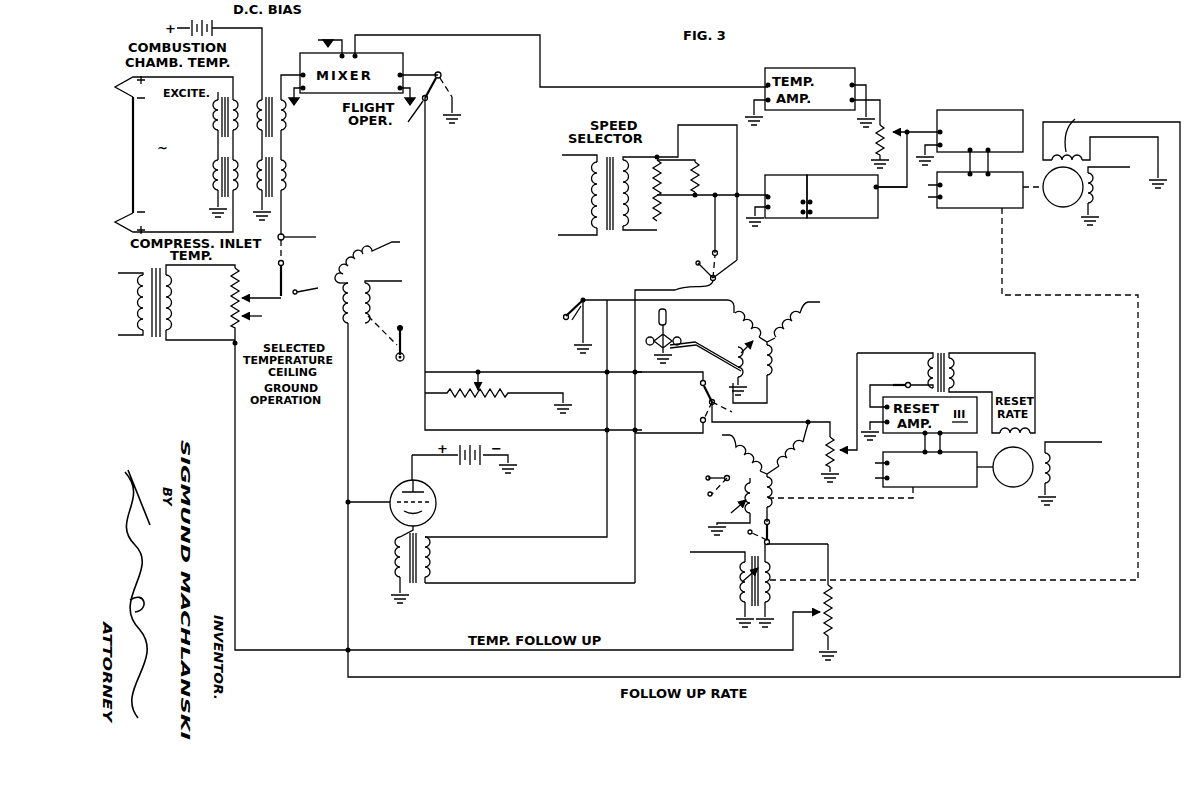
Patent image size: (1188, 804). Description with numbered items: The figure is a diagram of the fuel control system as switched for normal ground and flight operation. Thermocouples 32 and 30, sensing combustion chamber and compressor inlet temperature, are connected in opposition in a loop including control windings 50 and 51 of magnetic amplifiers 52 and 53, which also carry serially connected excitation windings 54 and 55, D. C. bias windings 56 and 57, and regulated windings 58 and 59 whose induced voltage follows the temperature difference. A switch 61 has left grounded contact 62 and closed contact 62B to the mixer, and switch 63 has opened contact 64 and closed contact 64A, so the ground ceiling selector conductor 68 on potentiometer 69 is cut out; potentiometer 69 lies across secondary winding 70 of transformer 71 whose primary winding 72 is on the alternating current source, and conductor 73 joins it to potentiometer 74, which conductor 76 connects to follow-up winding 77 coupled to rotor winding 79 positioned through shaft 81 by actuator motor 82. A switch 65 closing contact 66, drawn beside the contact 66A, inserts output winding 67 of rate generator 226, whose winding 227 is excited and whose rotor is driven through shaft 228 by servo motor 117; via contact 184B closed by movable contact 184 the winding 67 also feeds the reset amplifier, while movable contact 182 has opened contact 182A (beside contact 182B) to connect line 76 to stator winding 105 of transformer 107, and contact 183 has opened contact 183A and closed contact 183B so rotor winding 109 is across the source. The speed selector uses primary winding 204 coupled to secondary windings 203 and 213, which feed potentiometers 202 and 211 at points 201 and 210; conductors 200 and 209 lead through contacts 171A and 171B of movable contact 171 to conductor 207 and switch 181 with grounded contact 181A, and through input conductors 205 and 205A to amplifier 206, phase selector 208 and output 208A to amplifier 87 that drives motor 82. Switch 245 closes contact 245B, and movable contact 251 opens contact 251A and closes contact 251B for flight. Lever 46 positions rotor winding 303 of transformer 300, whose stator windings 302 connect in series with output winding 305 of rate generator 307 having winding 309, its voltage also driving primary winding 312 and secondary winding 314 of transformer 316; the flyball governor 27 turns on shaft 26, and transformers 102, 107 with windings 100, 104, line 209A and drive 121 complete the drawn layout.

The temperature responsive element 32 is at (128, 80).
The temperature responsive element 30 is at (128, 215).
The control winding 50 is at (233, 98).
The control winding 51 is at (233, 192).
The magnetic amplifier 52 is at (294, 115).
The magnetic amplifier 53 is at (294, 180).
The excitation winding 54 is at (210, 118).
The excitation winding 55 is at (210, 178).
The D. C. bias winding 56 is at (260, 98).
The D. C. bias winding 57 is at (264, 195).
The control winding 58 is at (287, 122).
The control winding 59 is at (289, 165).
The switch 61 is at (446, 135).
The grounded contact 62 is at (462, 120).
The contact 62B is at (401, 122).
The switch 63 is at (289, 234).
The contact 64 is at (278, 263).
The contact 64A is at (300, 237).
The switch 65 is at (279, 281).
The contact 66 is at (300, 290).
The potentiometer tap arm 66A is at (283, 299).
The conductor 68 is at (262, 316).
The potentiometer 69 is at (219, 305).
The secondary winding 70 is at (177, 298).
The transformer 71 is at (150, 346).
The primary winding 72 is at (130, 272).
The conductor 73 is at (270, 650).
The potentiometer 74 is at (840, 606).
The conductor 76 is at (830, 549).
The follow-up winding 77 is at (775, 591).
The rotor winding 79 is at (736, 599).
The shaft 81 is at (938, 582).
The actuator motor 82 is at (973, 208).
The amplifier 87 is at (962, 110).
The output winding 67 is at (1022, 431).
The actual speed synchro rotor 100 is at (740, 378).
The transformer 102 is at (801, 336).
The synchro stator winding 104 is at (750, 326).
The stator winding 105 is at (765, 473).
The transformer 107 is at (712, 462).
The rotor winding 109 is at (735, 506).
The servo motor 117 is at (948, 488).
The mechanical drive connection 121 is at (892, 500).
The movable contact 171 is at (662, 272).
The contact 171A is at (696, 263).
The contact 171B is at (718, 255).
The switch 181 is at (580, 320).
The grounded contact 181A is at (580, 331).
The movable contact 182 is at (770, 522).
The contact 182A is at (748, 535).
The switch contact 182B is at (770, 540).
The movable switch contact 183 is at (705, 480).
The contact 183A is at (707, 496).
The contact 183B is at (724, 480).
The movable contact 184 is at (906, 384).
The contact 184B is at (890, 386).
The conductor 200 is at (697, 255).
The point 201 is at (663, 216).
The potentiometer 202 is at (660, 222).
The secondary winding 203 is at (609, 231).
The primary winding 204 is at (590, 197).
The input conductor 205 is at (750, 192).
The input line 205A is at (760, 223).
The amplifier 206 is at (790, 175).
The conductor 207 is at (812, 213).
The phase selector 208 is at (838, 175).
The output 208A is at (882, 193).
The conductor 209 is at (717, 192).
The conductor 209A is at (738, 130).
The point 210 is at (698, 170).
The potentiometer 211 is at (694, 183).
The secondary winding 213 is at (641, 193).
The rate generator 226 is at (1031, 450).
The winding 227 is at (1055, 479).
The shaft 228 is at (986, 480).
The speed selector switch 245 is at (716, 281).
The contact 245B is at (739, 262).
The movable contact 251 is at (709, 403).
The contact 251A is at (700, 421).
The contact 251B is at (700, 384).
The shaft 26 is at (668, 313).
The flyball speed governor 27 is at (660, 337).
The lever 46 is at (405, 344).
The transformer 300 is at (366, 276).
The stator windings 302 is at (348, 262).
The rotor winding 303 is at (376, 297).
The output winding 305 is at (1078, 150).
The rate generator 307 is at (1066, 209).
The winding 309 is at (1096, 202).
The primary winding 312 is at (395, 561).
The secondary winding 314 is at (434, 561).
The transformer 316 is at (417, 590).